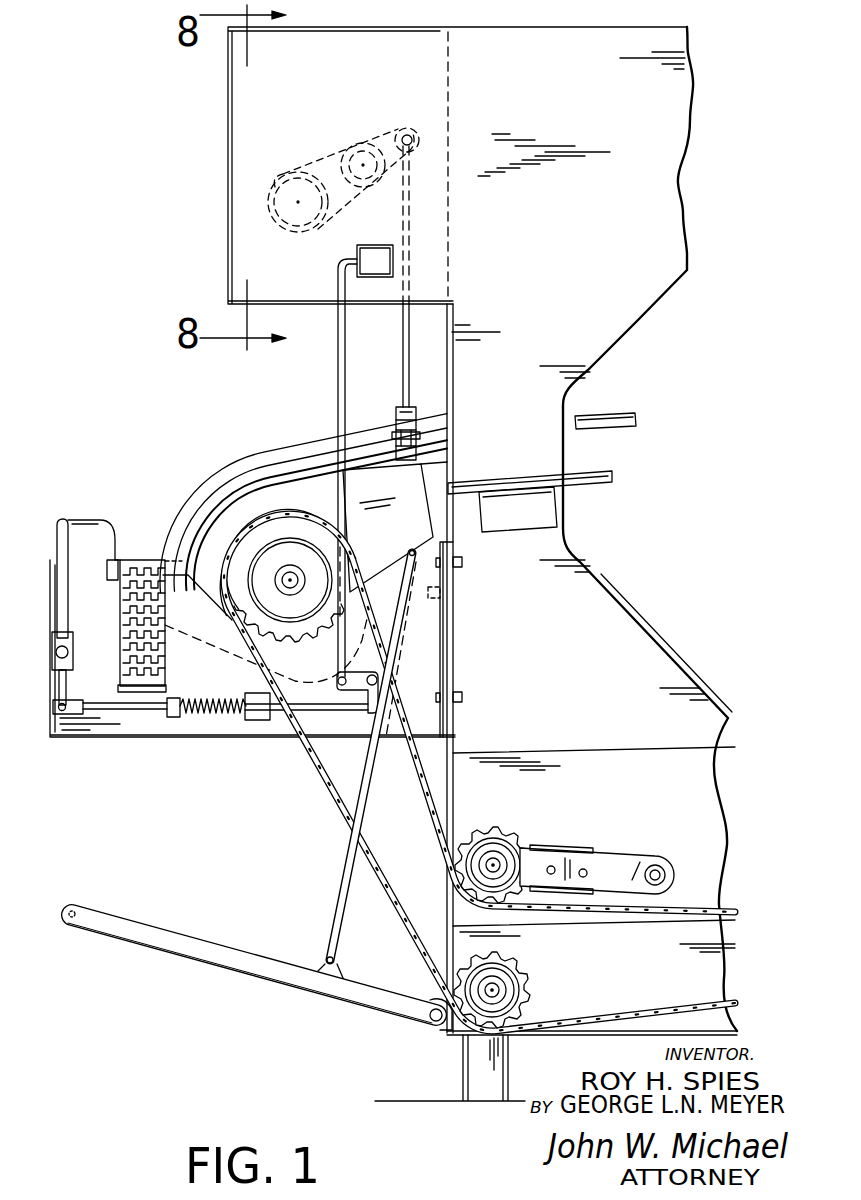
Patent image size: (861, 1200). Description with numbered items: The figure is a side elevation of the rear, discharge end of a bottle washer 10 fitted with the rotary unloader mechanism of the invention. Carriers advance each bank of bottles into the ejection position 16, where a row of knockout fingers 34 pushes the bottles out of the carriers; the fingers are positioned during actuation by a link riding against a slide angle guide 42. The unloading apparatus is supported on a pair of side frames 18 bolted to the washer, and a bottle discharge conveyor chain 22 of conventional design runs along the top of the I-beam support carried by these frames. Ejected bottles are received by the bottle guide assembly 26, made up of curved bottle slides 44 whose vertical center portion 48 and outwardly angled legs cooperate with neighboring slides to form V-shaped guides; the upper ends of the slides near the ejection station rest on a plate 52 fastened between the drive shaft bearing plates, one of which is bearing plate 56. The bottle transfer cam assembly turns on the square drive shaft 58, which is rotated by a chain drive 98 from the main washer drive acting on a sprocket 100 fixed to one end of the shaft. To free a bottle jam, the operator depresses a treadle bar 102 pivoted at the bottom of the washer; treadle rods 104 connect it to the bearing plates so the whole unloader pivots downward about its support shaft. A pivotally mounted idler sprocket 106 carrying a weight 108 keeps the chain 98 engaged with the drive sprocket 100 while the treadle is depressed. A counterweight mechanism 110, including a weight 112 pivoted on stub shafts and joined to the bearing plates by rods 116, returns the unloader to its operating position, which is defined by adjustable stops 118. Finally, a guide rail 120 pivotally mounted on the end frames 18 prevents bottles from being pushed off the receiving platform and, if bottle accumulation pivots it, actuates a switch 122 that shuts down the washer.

The bottle washer 10 is at (674, 519).
The ejection position 16 is at (431, 406).
The side frames 18 is at (210, 677).
The bottle discharge conveyor chain 22 is at (143, 690).
The bottle guide assembly 26 is at (240, 460).
The knockout fingers 34 is at (608, 420).
The slide angle guide 42 is at (596, 472).
The curved bottle slides 44 is at (269, 467).
The vertical center portion 48 is at (206, 486).
The plate 52 is at (432, 487).
The drive shaft bearing plate 56 is at (407, 512).
The square drive shaft 58 is at (296, 572).
The chain drive 98 is at (323, 778).
The sprocket 100 is at (256, 617).
The treadle bar 102 is at (137, 932).
The treadle rods 104 is at (336, 905).
The idler sprocket 106 is at (553, 821).
The weight 108 is at (576, 846).
The counterweight mechanism 110 is at (327, 134).
The weight 112 is at (290, 228).
The rods 116 is at (402, 336).
The adjustable stops 118 is at (396, 420).
The guide rail 120 is at (55, 525).
The switch 122 is at (375, 256).